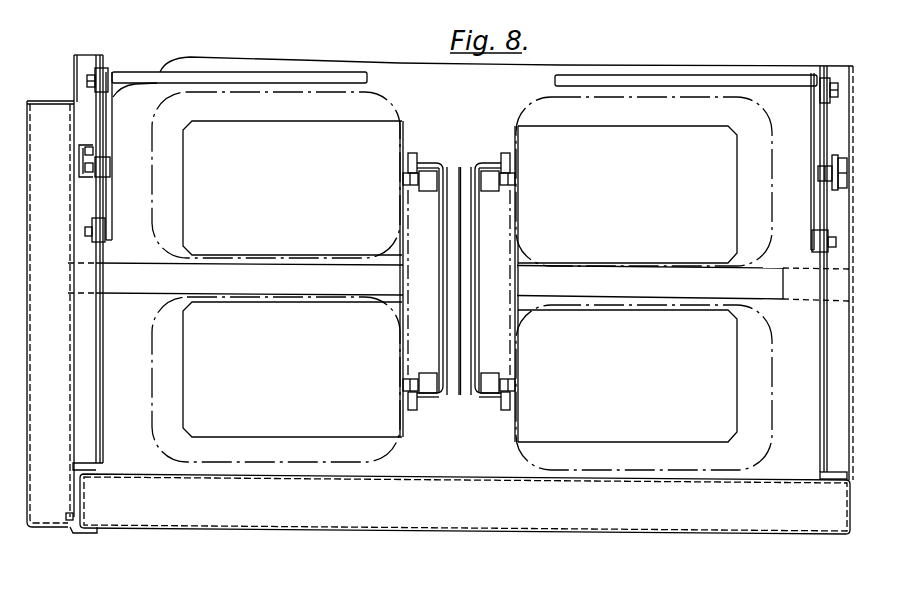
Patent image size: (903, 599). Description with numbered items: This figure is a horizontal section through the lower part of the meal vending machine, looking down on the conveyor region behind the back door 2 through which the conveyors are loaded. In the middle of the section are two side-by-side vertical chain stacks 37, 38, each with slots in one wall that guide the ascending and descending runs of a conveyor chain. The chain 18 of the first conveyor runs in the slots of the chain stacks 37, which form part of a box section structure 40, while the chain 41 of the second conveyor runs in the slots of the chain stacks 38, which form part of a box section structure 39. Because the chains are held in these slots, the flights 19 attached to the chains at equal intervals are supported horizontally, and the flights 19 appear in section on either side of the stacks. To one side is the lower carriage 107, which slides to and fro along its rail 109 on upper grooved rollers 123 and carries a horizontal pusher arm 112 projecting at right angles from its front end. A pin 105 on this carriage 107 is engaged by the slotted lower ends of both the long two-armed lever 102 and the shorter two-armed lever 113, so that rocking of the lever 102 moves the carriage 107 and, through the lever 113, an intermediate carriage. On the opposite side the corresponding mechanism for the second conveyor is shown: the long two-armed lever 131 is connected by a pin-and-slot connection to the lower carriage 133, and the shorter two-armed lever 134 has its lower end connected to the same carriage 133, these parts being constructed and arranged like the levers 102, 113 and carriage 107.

The door 2 is at (482, 519).
The endless chain 18 is at (515, 178).
The flights 19 is at (710, 365).
The vertical chain stacks 37 is at (487, 163).
The vertical chain stacks 38 is at (428, 163).
The box section structure 39 is at (441, 262).
The box section structure 40 is at (478, 262).
The chain 41 is at (403, 178).
The long two-armed lever 102 is at (843, 160).
The pin 105 is at (830, 176).
The carriage 107 is at (817, 207).
The rail 109 is at (827, 263).
The horizontal pusher arm 112 is at (807, 83).
The shorter two-armed lever 113 is at (834, 158).
The upper grooved rollers 123 is at (827, 101).
The long two-armed lever 131 is at (83, 148).
The lower carriage 133 is at (113, 85).
The shorter two-armed lever 134 is at (92, 151).